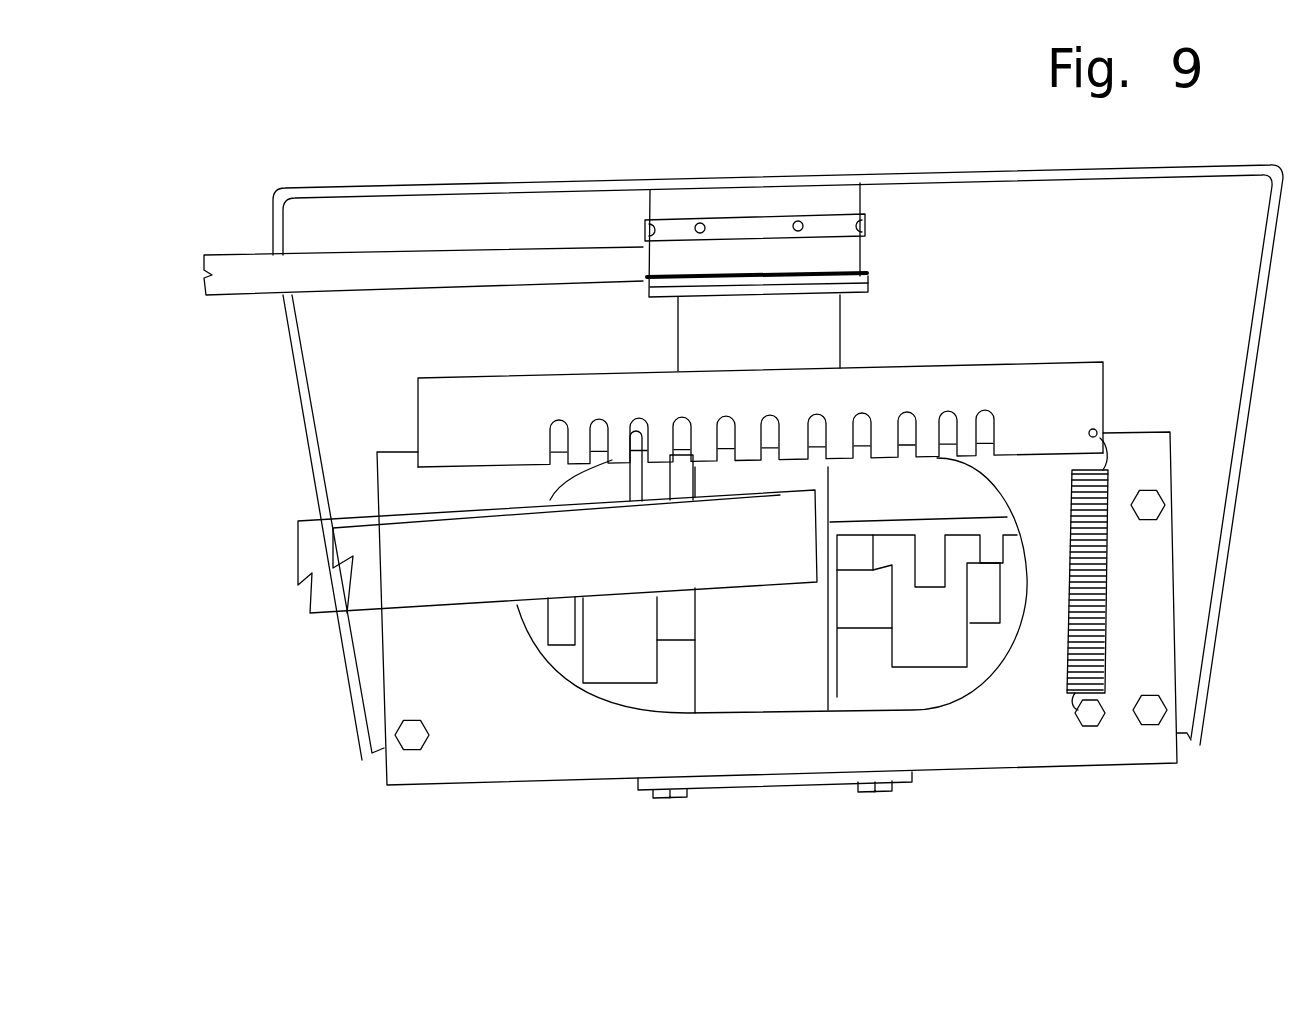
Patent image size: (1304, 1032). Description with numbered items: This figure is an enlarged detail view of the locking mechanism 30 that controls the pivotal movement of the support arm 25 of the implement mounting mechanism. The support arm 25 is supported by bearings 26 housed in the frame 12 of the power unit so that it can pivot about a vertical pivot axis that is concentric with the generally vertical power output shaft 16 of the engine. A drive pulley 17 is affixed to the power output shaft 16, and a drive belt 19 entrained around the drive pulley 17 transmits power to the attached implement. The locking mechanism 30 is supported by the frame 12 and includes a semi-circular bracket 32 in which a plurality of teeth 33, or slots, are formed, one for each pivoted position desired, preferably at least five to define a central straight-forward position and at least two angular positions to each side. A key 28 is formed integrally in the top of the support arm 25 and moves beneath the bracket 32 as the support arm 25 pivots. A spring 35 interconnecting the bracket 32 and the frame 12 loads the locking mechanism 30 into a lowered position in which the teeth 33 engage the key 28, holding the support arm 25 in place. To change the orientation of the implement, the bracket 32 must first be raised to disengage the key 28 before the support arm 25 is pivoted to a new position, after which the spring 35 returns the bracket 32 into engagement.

The frame 12 is at (1108, 738).
The power output shaft 16 is at (827, 340).
The drive pulley 17 is at (867, 278).
The drive belt 19 is at (404, 267).
The support arm 25 is at (472, 585).
The bearings 26 is at (778, 820).
The key 28 is at (637, 480).
The locking mechanism 30 is at (1032, 330).
The semi-circular bracket 32 is at (803, 394).
The teeth 33 is at (770, 420).
The spring 35 is at (1103, 651).